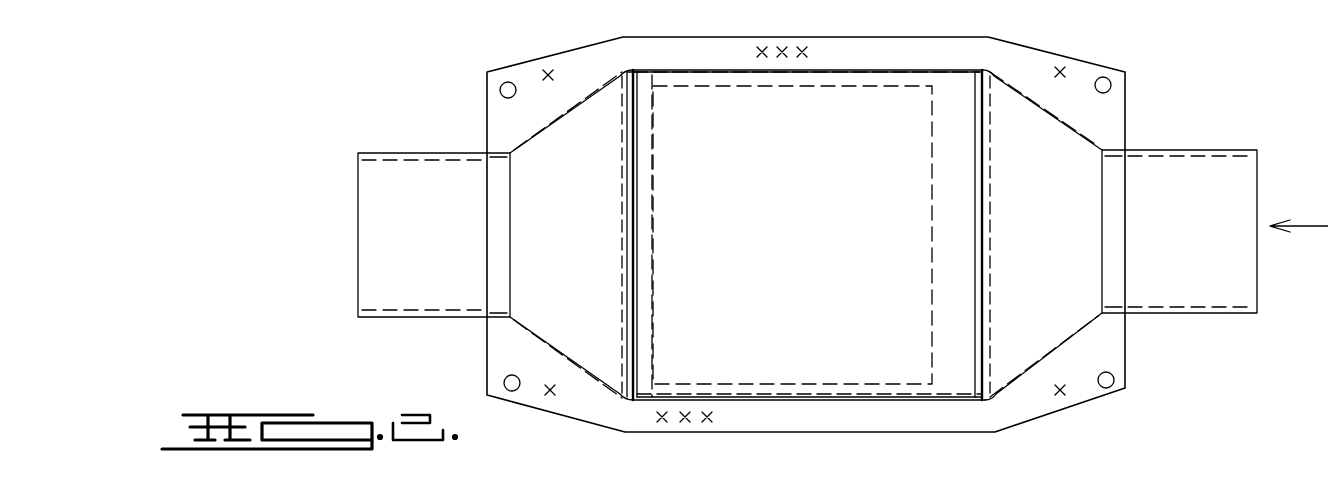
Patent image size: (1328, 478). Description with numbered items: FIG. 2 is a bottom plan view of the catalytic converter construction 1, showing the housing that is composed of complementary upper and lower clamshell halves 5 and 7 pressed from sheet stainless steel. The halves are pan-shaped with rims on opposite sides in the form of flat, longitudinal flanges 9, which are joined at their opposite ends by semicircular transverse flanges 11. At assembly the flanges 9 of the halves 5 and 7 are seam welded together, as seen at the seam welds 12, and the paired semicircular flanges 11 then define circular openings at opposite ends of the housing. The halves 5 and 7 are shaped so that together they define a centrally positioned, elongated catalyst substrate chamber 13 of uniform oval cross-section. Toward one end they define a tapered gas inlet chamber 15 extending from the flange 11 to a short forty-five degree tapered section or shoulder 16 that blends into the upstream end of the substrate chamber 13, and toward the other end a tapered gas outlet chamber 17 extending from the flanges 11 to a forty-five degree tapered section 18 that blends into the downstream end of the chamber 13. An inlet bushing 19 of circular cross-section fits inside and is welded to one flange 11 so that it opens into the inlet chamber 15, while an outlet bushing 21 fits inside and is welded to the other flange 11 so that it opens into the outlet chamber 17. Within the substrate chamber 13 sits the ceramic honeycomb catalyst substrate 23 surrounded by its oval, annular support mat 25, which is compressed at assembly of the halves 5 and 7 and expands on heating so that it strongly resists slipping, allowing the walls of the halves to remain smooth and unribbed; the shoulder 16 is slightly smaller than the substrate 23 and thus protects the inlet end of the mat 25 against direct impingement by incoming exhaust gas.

The catalytic converter construction 1 is at (1113, 42).
The upper clamshell half 5 is at (814, 251).
The lower clamshell half 7 is at (950, 95).
The longitudinal flanges 9 is at (904, 45).
The semicircular transverse flanges 11 is at (1120, 180).
The seam weld 12 is at (782, 45).
The catalyst substrate chamber 13 is at (880, 75).
The gas inlet chamber 15 is at (1052, 134).
The tapered section or shoulder 16 is at (983, 203).
The gas outlet chamber 17 is at (548, 126).
The tapered section 18 is at (633, 195).
The inlet bushing 19 is at (1200, 234).
The outlet bushing 21 is at (432, 239).
The catalyst substrate 23 is at (827, 97).
The support mat 25 is at (705, 78).